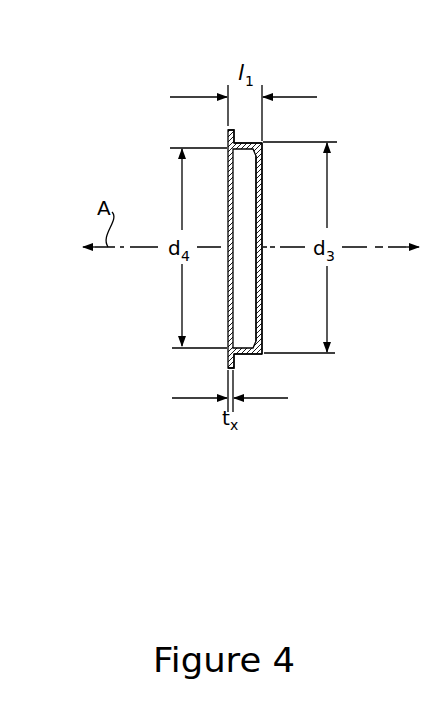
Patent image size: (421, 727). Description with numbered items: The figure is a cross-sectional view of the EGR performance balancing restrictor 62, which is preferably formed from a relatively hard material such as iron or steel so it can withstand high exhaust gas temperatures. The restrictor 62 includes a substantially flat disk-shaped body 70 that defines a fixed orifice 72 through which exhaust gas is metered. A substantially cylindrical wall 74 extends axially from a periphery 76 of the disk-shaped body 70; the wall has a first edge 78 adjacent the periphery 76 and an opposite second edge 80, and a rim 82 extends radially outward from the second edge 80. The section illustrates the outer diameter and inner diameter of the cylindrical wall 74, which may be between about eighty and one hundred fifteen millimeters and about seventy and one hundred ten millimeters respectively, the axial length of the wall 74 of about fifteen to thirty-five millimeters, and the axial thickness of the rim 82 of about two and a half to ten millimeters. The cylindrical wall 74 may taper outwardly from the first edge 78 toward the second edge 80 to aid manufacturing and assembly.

The EGR performance balancing restrictor 62 is at (340, 88).
The disk-shaped body 70 is at (262, 340).
The fixed orifice 72 is at (264, 238).
The cylindrical wall 74 is at (256, 356).
The periphery 76 is at (266, 146).
The first edge 78 is at (265, 136).
The second edge 80 is at (226, 142).
The rim 82 is at (232, 360).